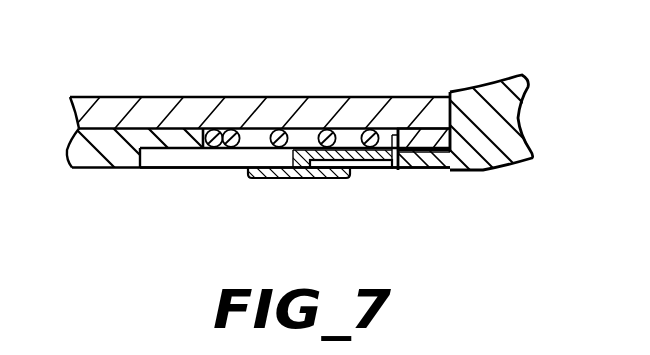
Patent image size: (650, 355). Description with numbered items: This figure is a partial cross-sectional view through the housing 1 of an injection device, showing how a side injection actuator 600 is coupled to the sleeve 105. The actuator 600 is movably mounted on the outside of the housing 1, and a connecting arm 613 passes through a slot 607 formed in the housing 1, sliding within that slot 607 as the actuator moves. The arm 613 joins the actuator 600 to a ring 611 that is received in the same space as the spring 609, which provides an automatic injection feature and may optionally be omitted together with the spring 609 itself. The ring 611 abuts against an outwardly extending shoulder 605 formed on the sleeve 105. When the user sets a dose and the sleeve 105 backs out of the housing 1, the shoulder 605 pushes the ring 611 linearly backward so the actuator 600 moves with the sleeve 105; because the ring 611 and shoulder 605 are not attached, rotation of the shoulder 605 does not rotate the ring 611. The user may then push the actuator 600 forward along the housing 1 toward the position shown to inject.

The housing 1 is at (487, 102).
The sleeve 105 is at (157, 98).
The side injection actuator 600 is at (310, 168).
The shoulder 605 is at (417, 138).
The slot 607 is at (157, 158).
The spring 609 is at (270, 146).
The ring 611 is at (393, 167).
The connecting arm 613 is at (290, 155).